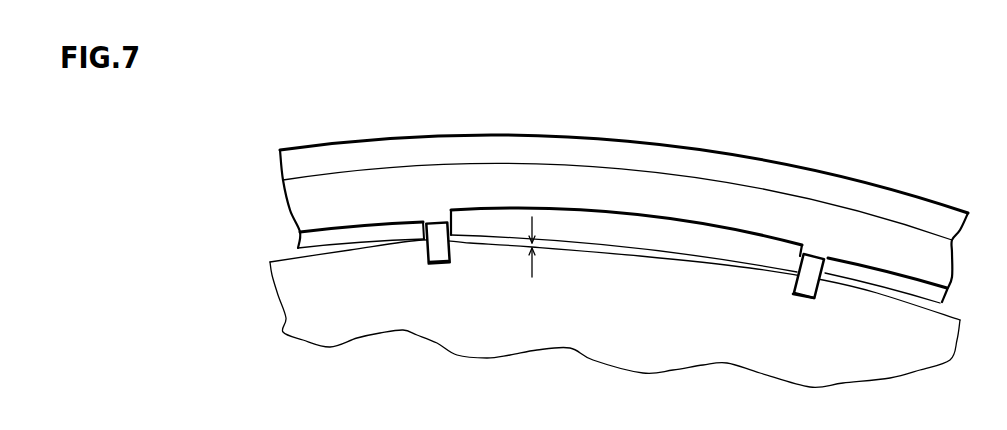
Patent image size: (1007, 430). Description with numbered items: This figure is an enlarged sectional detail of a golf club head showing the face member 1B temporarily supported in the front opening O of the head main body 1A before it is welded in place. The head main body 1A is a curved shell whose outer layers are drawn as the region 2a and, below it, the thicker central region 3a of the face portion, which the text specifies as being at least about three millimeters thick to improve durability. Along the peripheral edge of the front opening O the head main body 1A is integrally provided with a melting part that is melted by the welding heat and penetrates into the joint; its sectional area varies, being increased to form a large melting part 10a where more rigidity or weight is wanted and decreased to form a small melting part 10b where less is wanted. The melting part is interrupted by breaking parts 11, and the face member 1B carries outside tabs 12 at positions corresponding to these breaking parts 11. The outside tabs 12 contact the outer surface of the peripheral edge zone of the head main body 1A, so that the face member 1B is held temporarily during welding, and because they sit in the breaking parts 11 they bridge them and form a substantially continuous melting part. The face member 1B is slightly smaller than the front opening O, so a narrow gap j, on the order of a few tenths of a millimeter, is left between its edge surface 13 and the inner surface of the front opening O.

The head main body 1A is at (510, 127).
The face member 1B is at (732, 312).
The outer layer 2a is at (767, 191).
The thicker central region 3a is at (697, 198).
The large melting part 10a is at (580, 223).
The small melting part 10b is at (342, 236).
The breaking part 11 is at (439, 222).
The outside tab 12 is at (436, 252).
The edge surface 13 is at (627, 249).
The gap j is at (536, 251).
The front opening O is at (877, 297).